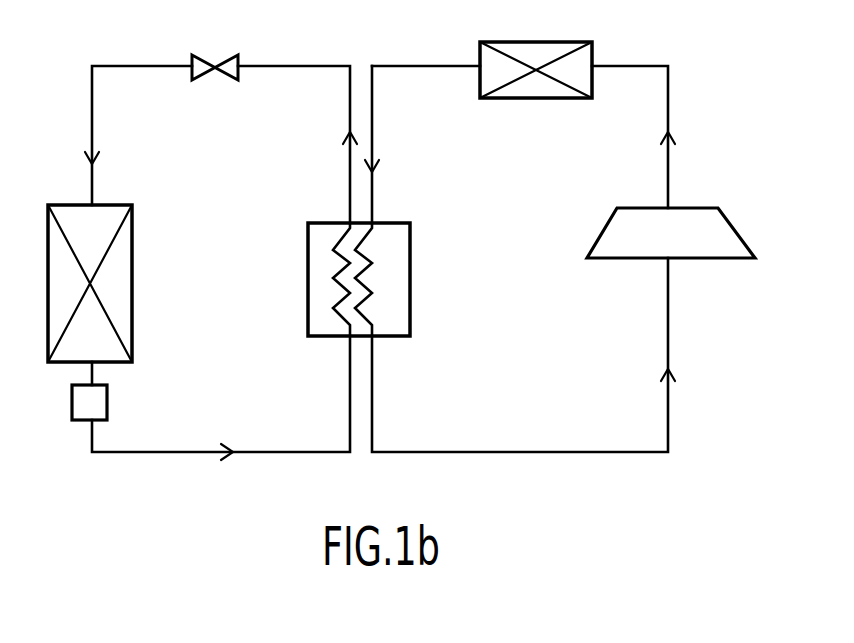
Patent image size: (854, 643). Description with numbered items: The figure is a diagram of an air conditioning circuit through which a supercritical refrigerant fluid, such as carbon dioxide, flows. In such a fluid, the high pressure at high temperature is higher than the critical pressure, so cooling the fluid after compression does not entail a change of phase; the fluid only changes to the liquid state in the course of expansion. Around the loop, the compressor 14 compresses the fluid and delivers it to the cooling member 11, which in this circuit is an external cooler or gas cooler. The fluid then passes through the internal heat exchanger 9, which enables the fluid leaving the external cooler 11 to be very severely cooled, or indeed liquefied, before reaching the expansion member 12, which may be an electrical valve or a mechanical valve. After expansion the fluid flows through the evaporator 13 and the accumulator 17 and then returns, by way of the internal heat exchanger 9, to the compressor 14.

The internal heat exchanger 9 is at (410, 297).
The cooling member 11 is at (553, 42).
The expansion member 12 is at (216, 62).
The evaporator 13 is at (133, 233).
The compressor 14 is at (740, 230).
The accumulator 17 is at (107, 403).